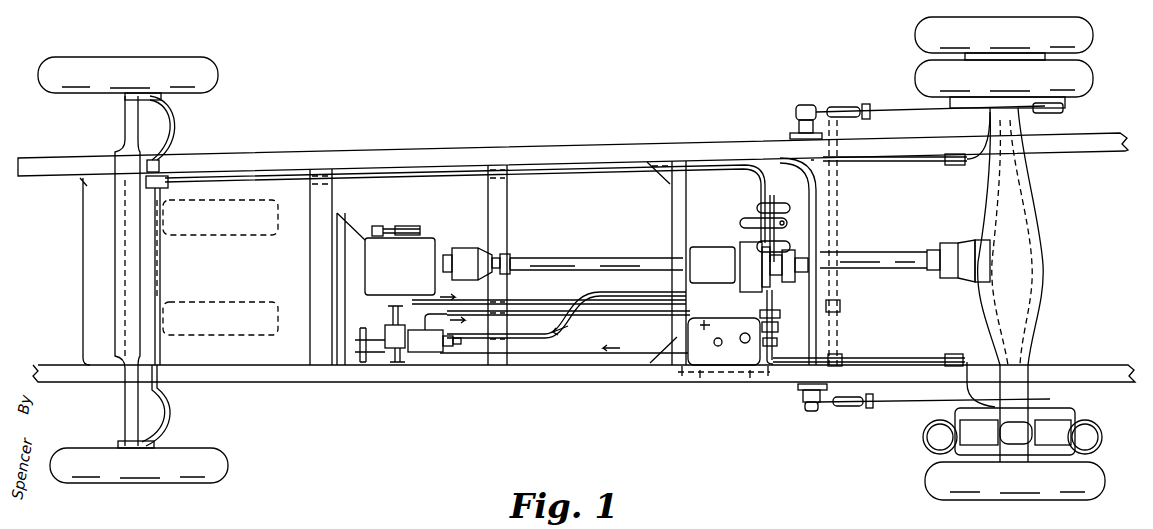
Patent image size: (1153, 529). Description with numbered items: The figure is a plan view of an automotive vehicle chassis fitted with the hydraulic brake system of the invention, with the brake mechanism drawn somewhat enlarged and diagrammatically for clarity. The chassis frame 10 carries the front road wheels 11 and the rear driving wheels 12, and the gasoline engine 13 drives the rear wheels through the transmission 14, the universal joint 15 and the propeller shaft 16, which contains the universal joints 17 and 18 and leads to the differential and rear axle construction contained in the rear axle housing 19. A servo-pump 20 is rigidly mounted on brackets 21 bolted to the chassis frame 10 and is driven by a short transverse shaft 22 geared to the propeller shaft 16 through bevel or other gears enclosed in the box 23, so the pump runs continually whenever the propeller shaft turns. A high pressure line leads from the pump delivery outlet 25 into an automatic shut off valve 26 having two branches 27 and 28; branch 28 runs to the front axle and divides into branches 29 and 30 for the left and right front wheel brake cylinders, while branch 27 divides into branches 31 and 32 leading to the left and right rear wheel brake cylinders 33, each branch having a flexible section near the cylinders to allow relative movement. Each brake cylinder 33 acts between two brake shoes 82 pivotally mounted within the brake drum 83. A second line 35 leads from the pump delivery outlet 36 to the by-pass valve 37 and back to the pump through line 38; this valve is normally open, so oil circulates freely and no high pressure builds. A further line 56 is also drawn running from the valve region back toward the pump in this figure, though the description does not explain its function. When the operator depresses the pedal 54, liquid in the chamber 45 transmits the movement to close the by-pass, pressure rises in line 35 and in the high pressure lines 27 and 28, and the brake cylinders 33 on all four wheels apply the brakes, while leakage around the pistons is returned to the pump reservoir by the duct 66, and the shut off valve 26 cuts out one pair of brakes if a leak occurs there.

The chassis frame 10 is at (479, 148).
The front road wheels 11 is at (215, 78).
The rear driving wheels 12 is at (915, 75).
The gasoline engine 13 is at (212, 300).
The transmission 14 is at (400, 260).
The universal joint 15 is at (462, 248).
The propeller shaft 16 is at (590, 258).
The universal joint 17 is at (762, 242).
The universal joint 18 is at (955, 245).
The rear axle housing 19 is at (1032, 255).
The servo-pump 20 is at (742, 370).
The brackets 21 is at (688, 370).
The short transverse shaft 22 is at (712, 265).
The gear box 23 is at (710, 244).
The pump delivery outlet 25 is at (781, 314).
The automatic shut off valve 26 is at (779, 327).
The high pressure branch 27 is at (778, 345).
The high pressure branch 28 is at (376, 176).
The front brake line branch 29 is at (172, 416).
The front brake line branch 30 is at (168, 128).
The rear brake line branch 31 is at (930, 357).
The rear brake line branch 32 is at (840, 297).
The brake cylinder 33 is at (1016, 447).
The second line 35 is at (607, 294).
The pump delivery outlet 36 is at (775, 292).
The by-pass valve 37 is at (442, 352).
The return line 38 is at (472, 306).
The chamber 45 is at (400, 348).
The pedal 54 is at (380, 360).
The drain pipe 56 is at (572, 355).
The duct 66 is at (550, 304).
The brake shoes 82 is at (980, 447).
The brake drum 83 is at (1100, 443).